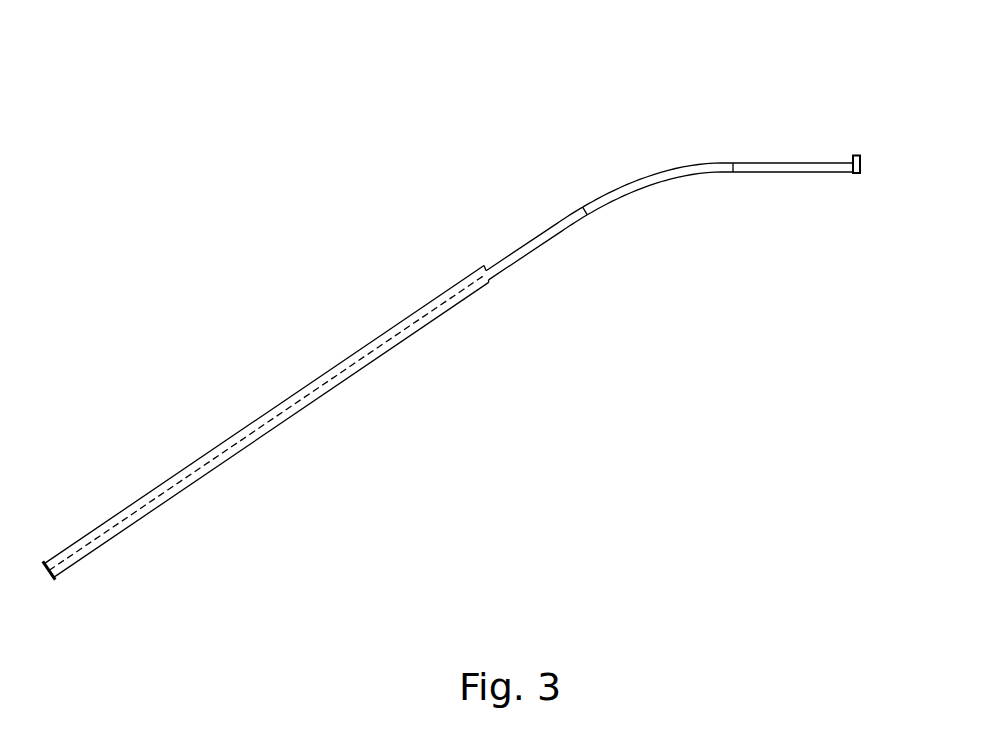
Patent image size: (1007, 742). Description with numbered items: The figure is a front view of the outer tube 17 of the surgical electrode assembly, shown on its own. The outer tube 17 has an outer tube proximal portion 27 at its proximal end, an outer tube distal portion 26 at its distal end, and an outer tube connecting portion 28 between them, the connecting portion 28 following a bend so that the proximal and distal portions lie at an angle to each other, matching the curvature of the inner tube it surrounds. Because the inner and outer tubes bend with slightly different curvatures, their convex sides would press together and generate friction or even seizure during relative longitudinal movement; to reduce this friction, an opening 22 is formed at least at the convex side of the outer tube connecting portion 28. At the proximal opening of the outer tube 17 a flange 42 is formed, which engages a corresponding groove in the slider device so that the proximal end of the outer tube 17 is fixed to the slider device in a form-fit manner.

The outer tube 17 is at (426, 305).
The opening 22 is at (556, 224).
The outer tube distal portion 26 is at (348, 374).
The outer tube proximal portion 27 is at (828, 164).
The outer tube connecting portion 28 is at (672, 180).
The flange 42 is at (860, 157).